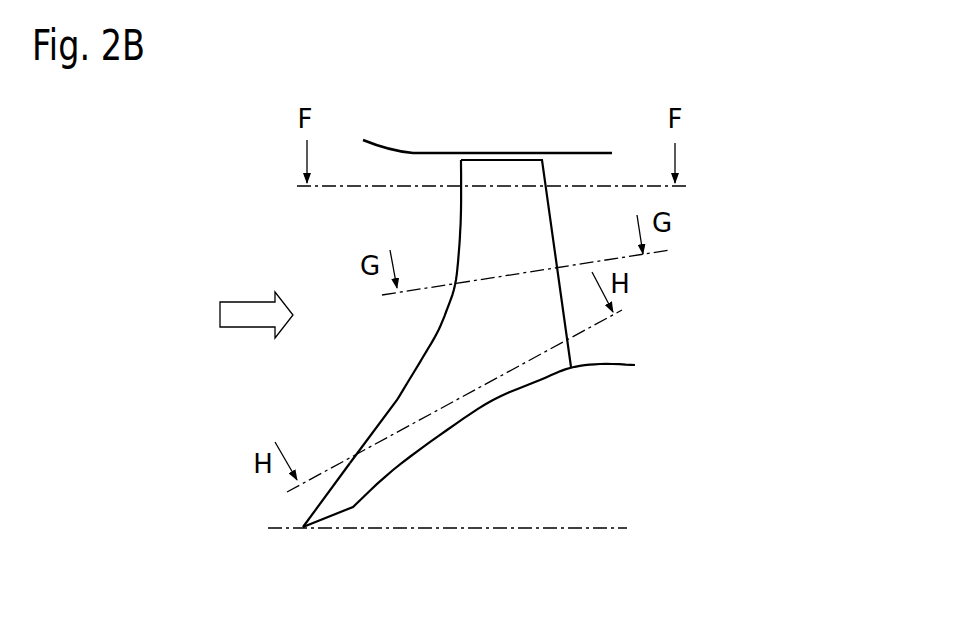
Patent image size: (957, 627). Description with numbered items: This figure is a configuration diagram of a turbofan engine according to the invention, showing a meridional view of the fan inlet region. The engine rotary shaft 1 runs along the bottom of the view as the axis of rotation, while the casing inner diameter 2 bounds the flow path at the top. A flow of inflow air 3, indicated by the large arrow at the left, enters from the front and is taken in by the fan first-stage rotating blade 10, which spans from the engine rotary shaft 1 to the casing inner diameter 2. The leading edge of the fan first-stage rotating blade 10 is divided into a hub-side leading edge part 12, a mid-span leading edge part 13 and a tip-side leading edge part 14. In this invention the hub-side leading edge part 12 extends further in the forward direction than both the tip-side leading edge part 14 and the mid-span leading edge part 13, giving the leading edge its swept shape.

The engine rotary shaft 1 is at (603, 528).
The casing inner diameter 2 is at (383, 143).
The flow of an inflow air 3 is at (235, 313).
The fan first-stage rotating blade 10 is at (417, 284).
The hub-side leading edge part 12 is at (318, 499).
The mid-span leading edge part 13 is at (423, 348).
The tip-side leading edge part 14 is at (455, 235).